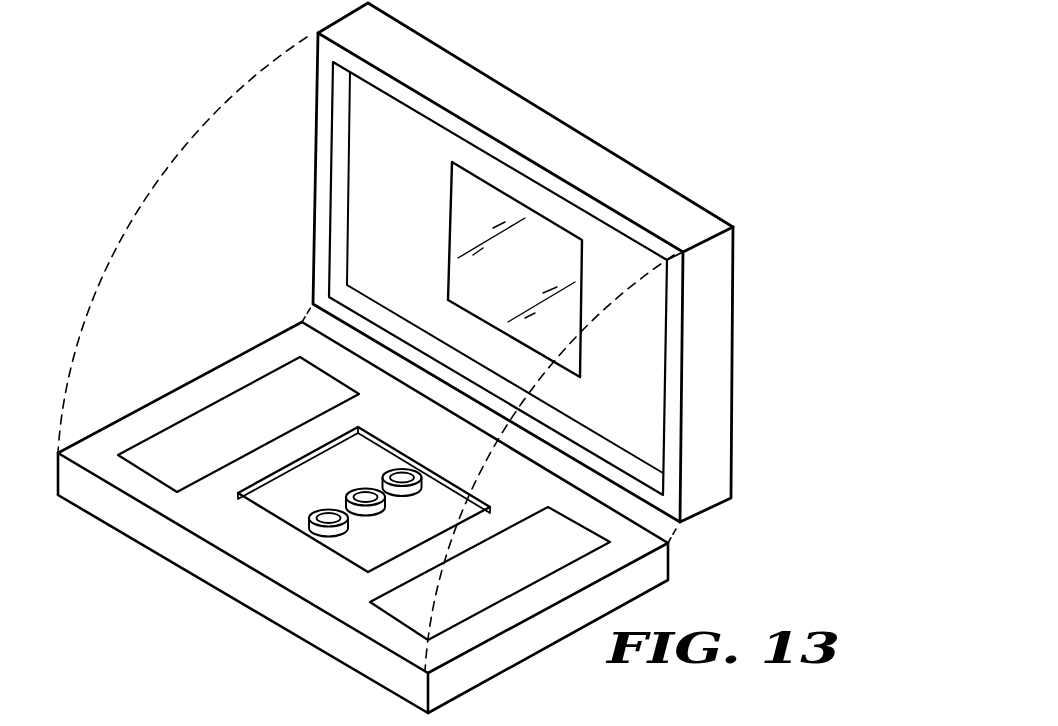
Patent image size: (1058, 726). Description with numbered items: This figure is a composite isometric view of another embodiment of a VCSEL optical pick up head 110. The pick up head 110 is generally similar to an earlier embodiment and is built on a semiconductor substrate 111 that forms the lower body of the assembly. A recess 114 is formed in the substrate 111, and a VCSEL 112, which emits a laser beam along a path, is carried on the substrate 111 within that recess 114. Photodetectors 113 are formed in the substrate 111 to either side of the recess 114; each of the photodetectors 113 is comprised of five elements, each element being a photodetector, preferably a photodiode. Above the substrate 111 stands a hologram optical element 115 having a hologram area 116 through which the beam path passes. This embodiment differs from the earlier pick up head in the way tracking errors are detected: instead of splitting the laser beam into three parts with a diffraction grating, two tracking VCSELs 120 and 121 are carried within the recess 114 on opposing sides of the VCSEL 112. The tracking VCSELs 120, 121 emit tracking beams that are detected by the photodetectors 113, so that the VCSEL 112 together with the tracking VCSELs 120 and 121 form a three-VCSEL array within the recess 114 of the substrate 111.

The VCSEL optical pick up head 110 is at (753, 613).
The semiconductor substrate 111 is at (182, 387).
The VCSEL 112 is at (346, 494).
The photodetectors 113 is at (252, 440).
The recess 114 is at (371, 445).
The hologram optical element 115 is at (316, 167).
The hologram area 116 is at (449, 226).
The tracking VCSEL 120 is at (346, 533).
The tracking VCSEL 121 is at (404, 500).